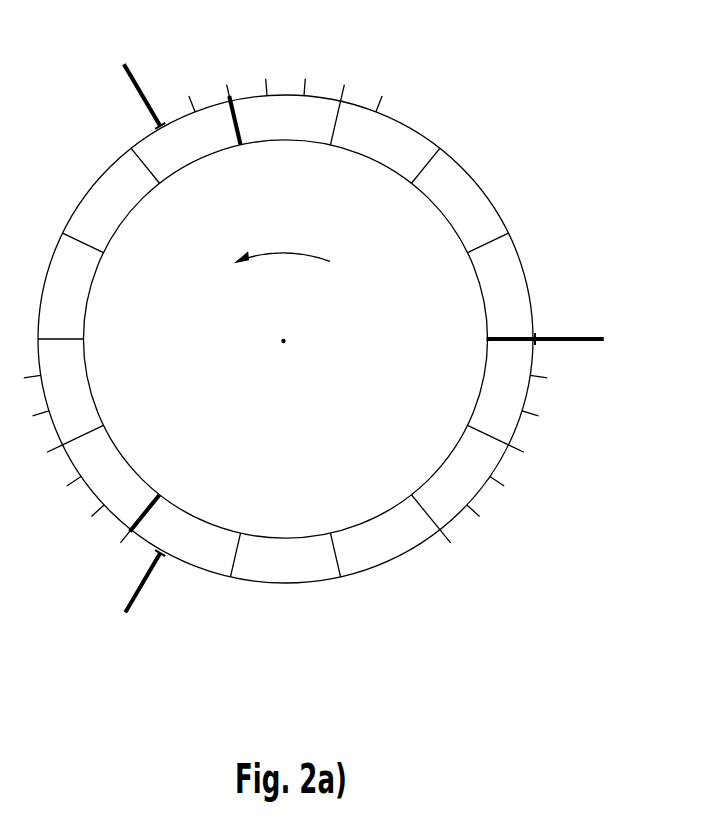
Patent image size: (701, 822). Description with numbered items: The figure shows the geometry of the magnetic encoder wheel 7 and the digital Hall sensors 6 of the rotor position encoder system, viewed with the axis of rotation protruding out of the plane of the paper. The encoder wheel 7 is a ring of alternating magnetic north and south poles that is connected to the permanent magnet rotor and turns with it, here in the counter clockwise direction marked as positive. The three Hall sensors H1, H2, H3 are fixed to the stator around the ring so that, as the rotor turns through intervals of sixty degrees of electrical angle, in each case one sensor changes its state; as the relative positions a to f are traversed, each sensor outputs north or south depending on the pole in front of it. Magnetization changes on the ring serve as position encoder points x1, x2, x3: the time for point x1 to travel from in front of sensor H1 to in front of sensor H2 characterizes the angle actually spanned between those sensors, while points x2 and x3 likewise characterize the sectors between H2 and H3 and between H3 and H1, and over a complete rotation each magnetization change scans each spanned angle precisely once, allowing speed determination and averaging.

The digital Hall sensor 6 is at (349, 339).
The magnetic encoder wheel 7 is at (305, 300).
The first Hall sensor H1 is at (586, 339).
The second Hall sensor H2 is at (135, 82).
The third Hall sensor H3 is at (137, 595).
The position encoder point x1 is at (535, 342).
The position encoder point x2 is at (236, 96).
The position encoder point x3 is at (133, 538).